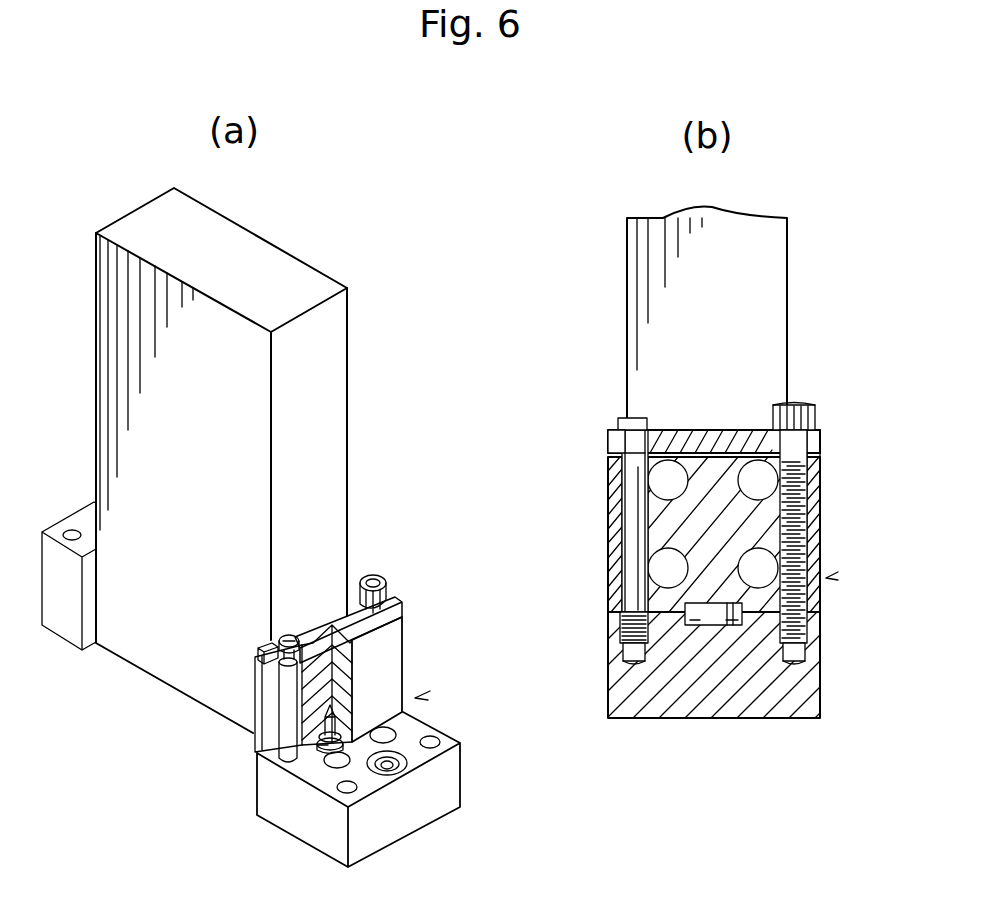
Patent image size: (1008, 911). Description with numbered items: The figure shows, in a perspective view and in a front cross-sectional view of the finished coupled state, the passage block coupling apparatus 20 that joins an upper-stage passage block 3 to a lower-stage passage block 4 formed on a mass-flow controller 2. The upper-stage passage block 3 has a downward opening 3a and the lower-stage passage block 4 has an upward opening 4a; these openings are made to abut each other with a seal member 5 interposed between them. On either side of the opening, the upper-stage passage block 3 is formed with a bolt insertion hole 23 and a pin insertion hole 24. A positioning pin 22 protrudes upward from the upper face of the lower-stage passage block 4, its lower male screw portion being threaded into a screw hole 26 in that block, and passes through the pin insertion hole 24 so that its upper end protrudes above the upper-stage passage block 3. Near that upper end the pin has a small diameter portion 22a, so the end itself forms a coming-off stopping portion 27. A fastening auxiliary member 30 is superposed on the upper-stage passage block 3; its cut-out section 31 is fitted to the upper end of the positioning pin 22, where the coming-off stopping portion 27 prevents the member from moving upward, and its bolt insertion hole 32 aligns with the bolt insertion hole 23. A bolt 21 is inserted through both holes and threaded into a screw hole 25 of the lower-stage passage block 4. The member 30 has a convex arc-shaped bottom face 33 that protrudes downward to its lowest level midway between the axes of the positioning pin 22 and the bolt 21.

The mass-flow controller 2 is at (346, 420).
The upper-stage passage block 3 is at (403, 652).
The downward opening 3a is at (323, 745).
The lower-stage passage block 4 is at (453, 782).
The upward opening 4a is at (732, 622).
The seal member 5 is at (340, 757).
The passage block coupling apparatus 20 is at (418, 697).
The bolt 21 is at (390, 586).
The positioning pin 22 is at (293, 731).
The small diameter portion 22a is at (632, 449).
The bolt insertion hole 23 is at (800, 496).
The pin insertion hole 24 is at (627, 519).
The screw hole 25 is at (800, 616).
The screw hole 26 is at (627, 607).
The coming-off stopping portion 27 is at (286, 636).
The fastening auxiliary member 30 is at (337, 605).
The cut-out section 31 is at (263, 652).
The bolt insertion hole 32 is at (800, 446).
The convex arc-shaped bottom face 33 is at (662, 428).